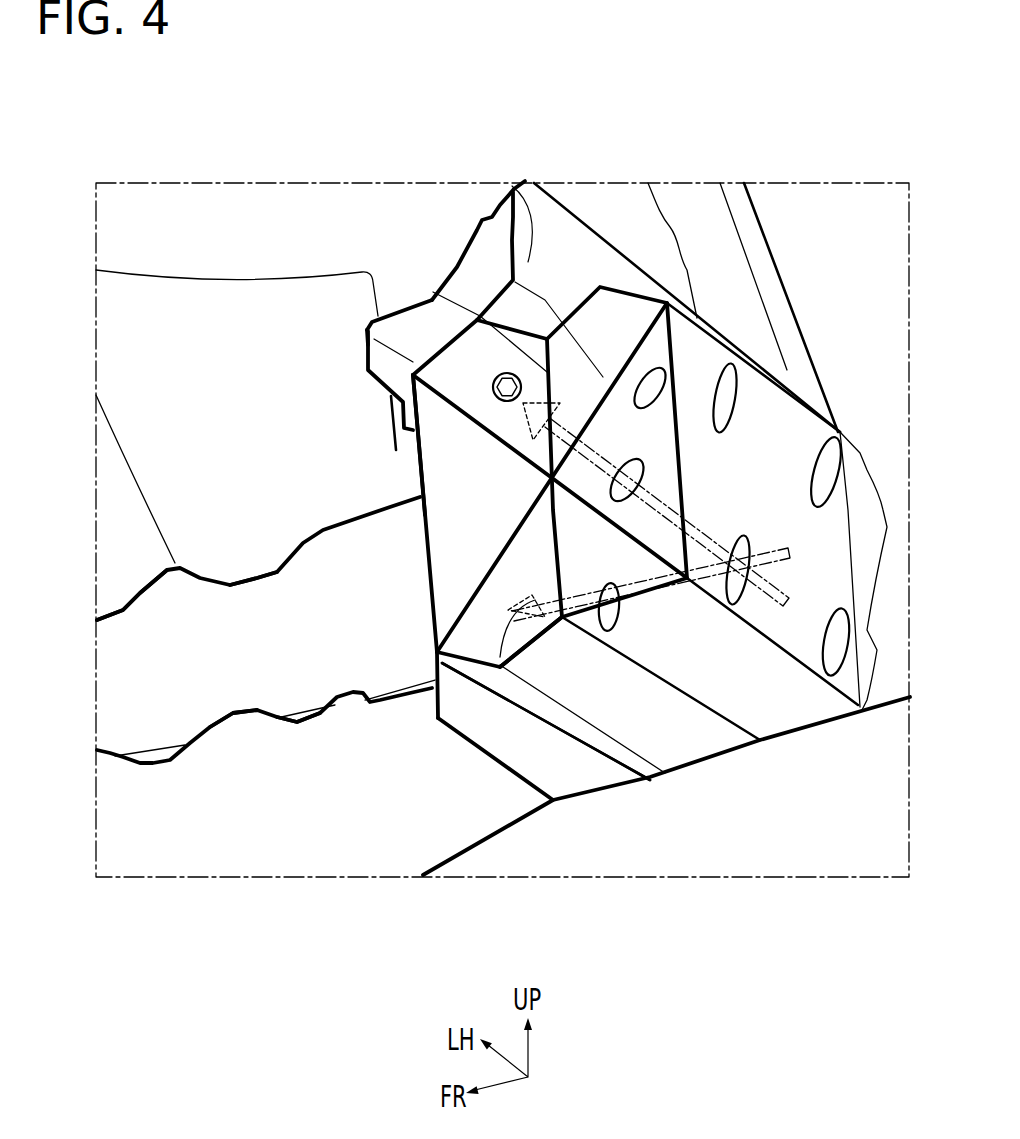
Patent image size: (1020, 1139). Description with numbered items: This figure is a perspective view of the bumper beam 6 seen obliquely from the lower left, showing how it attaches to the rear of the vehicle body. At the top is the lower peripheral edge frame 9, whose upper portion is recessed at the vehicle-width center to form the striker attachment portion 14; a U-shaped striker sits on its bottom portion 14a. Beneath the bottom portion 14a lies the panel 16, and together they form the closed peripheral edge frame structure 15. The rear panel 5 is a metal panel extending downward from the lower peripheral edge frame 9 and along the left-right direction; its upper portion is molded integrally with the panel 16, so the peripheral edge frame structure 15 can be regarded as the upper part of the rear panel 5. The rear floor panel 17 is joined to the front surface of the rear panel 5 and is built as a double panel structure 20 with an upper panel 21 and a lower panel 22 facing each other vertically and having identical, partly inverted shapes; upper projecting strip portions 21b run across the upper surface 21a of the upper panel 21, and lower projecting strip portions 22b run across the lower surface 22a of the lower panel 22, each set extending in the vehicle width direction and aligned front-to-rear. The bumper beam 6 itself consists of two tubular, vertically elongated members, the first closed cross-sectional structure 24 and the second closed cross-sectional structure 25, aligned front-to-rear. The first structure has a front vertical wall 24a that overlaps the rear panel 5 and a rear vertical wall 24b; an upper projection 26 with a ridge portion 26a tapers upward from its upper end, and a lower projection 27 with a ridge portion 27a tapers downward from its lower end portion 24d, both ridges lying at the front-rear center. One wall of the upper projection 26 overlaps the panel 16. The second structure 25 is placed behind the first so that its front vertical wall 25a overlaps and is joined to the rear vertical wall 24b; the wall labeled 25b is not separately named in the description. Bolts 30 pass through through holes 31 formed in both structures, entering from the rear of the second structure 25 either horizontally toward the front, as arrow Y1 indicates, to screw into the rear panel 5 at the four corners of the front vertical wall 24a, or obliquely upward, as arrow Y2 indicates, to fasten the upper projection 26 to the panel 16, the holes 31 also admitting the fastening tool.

The rear panel 5 is at (507, 747).
The bumper beam 6 is at (574, 593).
The lower peripheral edge frame 9 is at (367, 328).
The striker attachment portion 14 is at (470, 258).
The bottom portion 14a is at (441, 244).
The peripheral edge frame structure 15 is at (352, 356).
The panel 16 is at (512, 186).
The rear floor panel 17 is at (122, 668).
The double panel structure 20 is at (116, 775).
The upper panel 21 is at (258, 535).
The upper surface 21a is at (254, 577).
The upper projecting strip portion 21b is at (173, 562).
The lower panel 22 is at (266, 756).
The lower surface 22a is at (247, 717).
The lower projecting strip portion 22b is at (310, 723).
The first closed cross-sectional structure 24 is at (598, 717).
The front vertical wall 24a is at (418, 457).
The rear vertical wall 24b is at (540, 612).
The lower end portion 24d is at (432, 700).
The second closed cross-sectional structure 25 is at (697, 710).
The front vertical wall 25a is at (548, 528).
The upper flange 25b is at (715, 335).
The upper projection 26 is at (508, 337).
The ridge portion 26a is at (430, 292).
The lower projection 27 is at (545, 723).
The ridge portion 27a is at (588, 722).
The bolt 30 is at (507, 403).
The through hole 31 is at (607, 458).
The arrow Y1 is at (665, 592).
The arrow Y2 is at (660, 497).